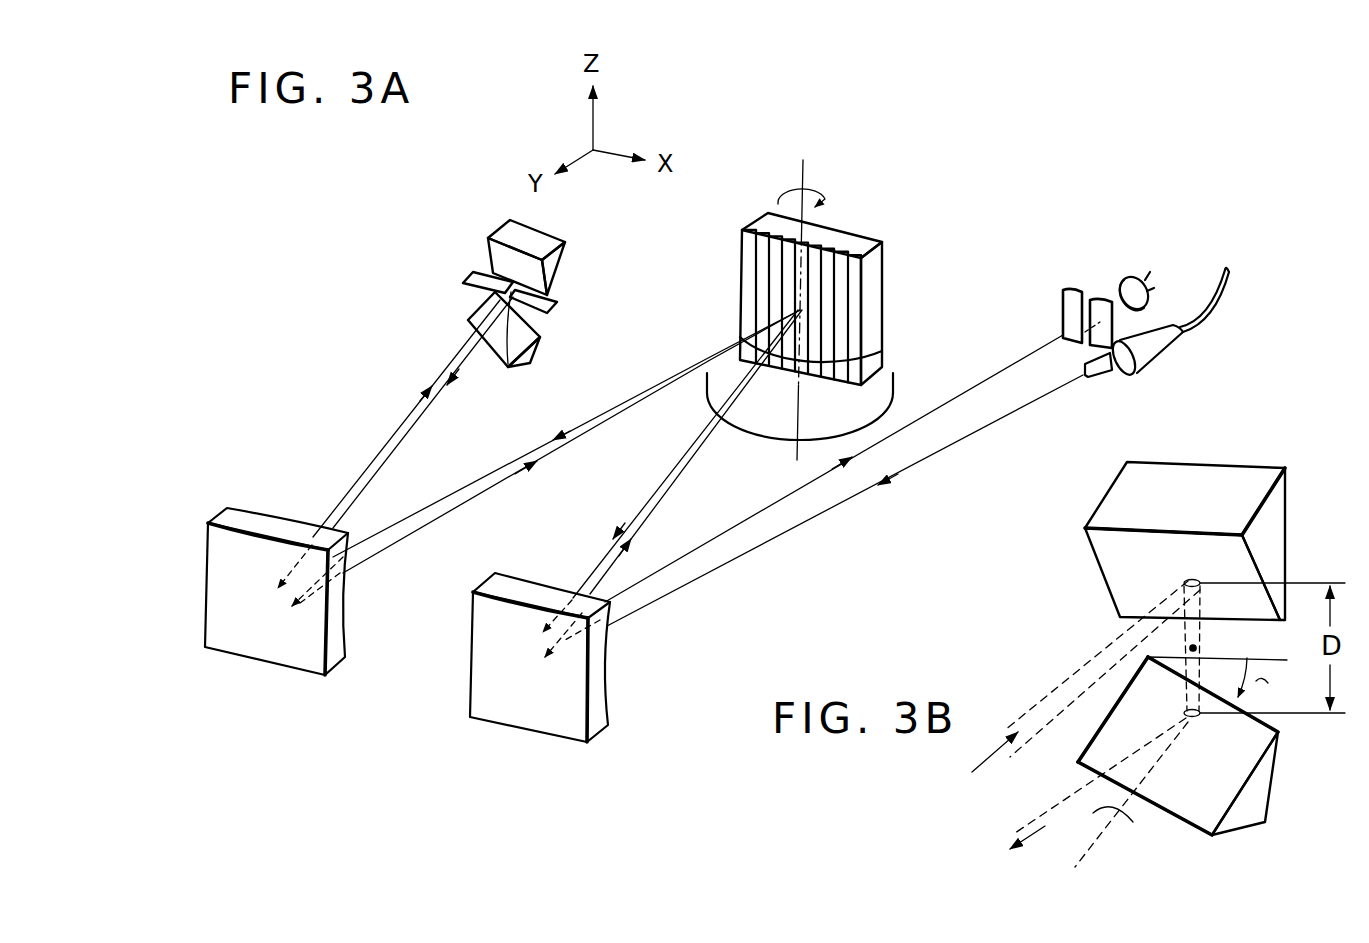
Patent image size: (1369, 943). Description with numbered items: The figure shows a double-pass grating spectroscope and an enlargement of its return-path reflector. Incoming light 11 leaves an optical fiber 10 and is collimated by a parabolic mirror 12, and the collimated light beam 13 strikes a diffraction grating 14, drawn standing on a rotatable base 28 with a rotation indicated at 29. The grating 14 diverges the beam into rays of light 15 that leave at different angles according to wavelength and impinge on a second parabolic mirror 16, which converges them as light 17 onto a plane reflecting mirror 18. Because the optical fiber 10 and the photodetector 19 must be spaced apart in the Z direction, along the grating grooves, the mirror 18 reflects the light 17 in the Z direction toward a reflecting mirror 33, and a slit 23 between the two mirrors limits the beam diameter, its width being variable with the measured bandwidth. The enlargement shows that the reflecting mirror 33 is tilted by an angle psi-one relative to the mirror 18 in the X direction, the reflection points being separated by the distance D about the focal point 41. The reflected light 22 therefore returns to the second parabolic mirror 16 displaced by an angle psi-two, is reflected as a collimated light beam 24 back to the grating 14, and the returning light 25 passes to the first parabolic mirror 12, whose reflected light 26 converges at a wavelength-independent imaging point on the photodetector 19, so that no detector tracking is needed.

In FIG. 3A, the optical fiber 10 is at (1097, 378).
In FIG. 3A, the incoming light 11 is at (781, 536).
In FIG. 3A, the parabolic mirror 12 is at (547, 720).
In FIG. 3A, the collimated light beam 13 is at (663, 502).
In FIG. 3A, the diffraction grating 14 is at (860, 237).
In FIG. 3A, the rays of light 15 is at (588, 420).
In FIG. 3A, the second parabolic mirror 16 is at (305, 653).
In FIG. 3A, the light 17 is at (393, 435).
In FIG. 3B, the light 17 is at (1037, 702).
In FIG. 3A, the plane reflecting mirror 18 is at (553, 233).
In FIG. 3B, the plane reflecting mirror 18 is at (1253, 473).
In FIG. 3A, the photodetector 19 is at (1128, 280).
In FIG. 3A, the reflected light 22 is at (422, 427).
In FIG. 3B, the reflected light 22 is at (1067, 793).
In FIG. 3A, the slit 23 is at (553, 297).
In FIG. 3A, the collimated light beam 24 is at (495, 487).
In FIG. 3A, the return light beam to mirror 25 is at (637, 510).
In FIG. 3A, the reflected light 26 is at (760, 508).
In FIG. 3A, the rotary stage 28 is at (893, 361).
In FIG. 3A, the rotation direction 29 is at (813, 184).
In FIG. 3A, the reflecting mirror 33 is at (475, 307).
In FIG. 3B, the reflecting mirror 33 is at (1262, 802).
In FIG. 3B, the focal point 41 is at (1190, 647).